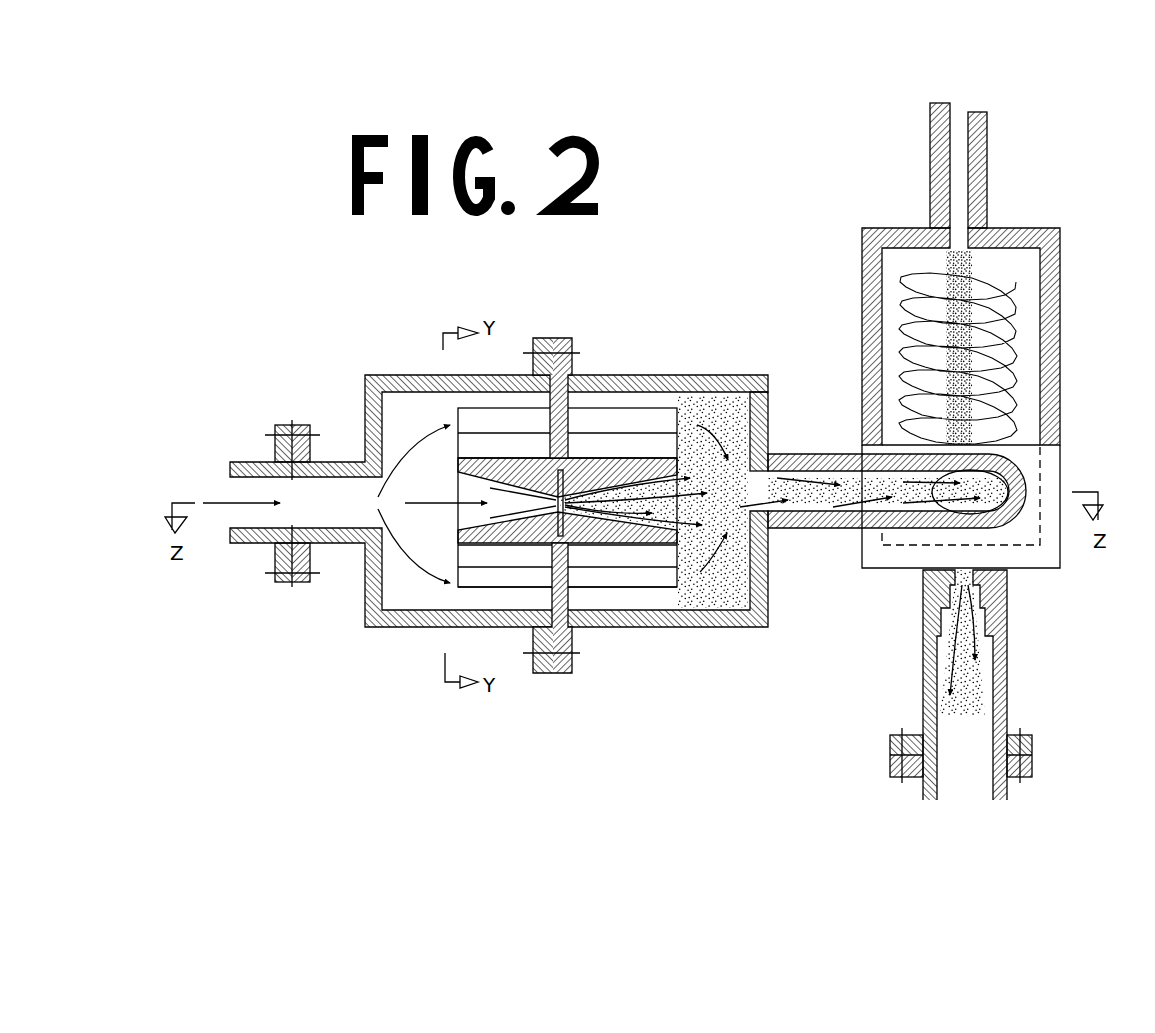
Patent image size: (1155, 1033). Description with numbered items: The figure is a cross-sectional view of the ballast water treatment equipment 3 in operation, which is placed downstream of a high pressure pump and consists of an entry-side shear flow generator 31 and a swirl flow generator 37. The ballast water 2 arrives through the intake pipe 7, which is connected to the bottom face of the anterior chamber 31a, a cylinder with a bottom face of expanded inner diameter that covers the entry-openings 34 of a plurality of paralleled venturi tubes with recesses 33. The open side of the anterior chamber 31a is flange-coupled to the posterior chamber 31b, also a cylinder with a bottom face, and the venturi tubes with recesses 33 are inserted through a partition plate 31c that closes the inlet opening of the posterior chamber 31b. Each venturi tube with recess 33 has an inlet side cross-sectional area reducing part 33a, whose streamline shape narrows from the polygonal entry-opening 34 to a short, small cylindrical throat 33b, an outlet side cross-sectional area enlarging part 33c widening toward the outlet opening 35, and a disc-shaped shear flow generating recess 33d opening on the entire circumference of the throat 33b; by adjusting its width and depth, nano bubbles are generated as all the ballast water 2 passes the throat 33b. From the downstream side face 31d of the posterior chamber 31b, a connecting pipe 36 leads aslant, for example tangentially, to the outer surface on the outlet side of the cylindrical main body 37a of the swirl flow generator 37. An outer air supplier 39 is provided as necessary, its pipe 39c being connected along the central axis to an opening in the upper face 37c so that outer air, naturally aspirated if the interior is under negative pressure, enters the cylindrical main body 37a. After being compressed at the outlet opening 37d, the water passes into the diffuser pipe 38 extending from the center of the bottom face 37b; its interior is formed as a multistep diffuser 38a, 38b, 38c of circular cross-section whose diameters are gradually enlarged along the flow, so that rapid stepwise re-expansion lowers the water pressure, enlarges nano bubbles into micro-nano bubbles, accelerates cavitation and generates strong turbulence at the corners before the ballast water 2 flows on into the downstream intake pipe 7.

The ballast water 2 is at (210, 502).
The ballast water treatment equipment 3 is at (690, 242).
The intake pipe 7 is at (248, 462).
The shear flow generator 31 is at (660, 716).
The anterior chamber 31a is at (513, 628).
The posterior chamber 31b is at (597, 628).
The partition plate 31c is at (570, 417).
The downstream side face 31d is at (768, 413).
The venturi tube with recess 33 is at (650, 425).
The inlet side cross-sectional area reducing part 33a is at (477, 493).
The throat 33b is at (555, 490).
The outlet side cross-sectional area enlarging part 33c is at (650, 468).
The shear flow generating recess 33d is at (572, 575).
The entry-opening 34 is at (458, 512).
The outlet opening 35 is at (700, 403).
The connecting pipe 36 is at (763, 628).
The swirl flow generator 37 is at (832, 295).
The cylindrical main body 37a is at (1060, 338).
The bottom face 37b is at (888, 570).
The upper face 37c is at (893, 228).
The outlet opening 37d is at (968, 554).
The diffuser pipe 38 is at (1007, 665).
The multistep diffuser 38a is at (968, 570).
The multistep diffuser 38b is at (1007, 607).
The multistep diffuser 38c is at (1005, 637).
The outer air supplier 39 is at (990, 160).
The pipe 39c is at (987, 195).